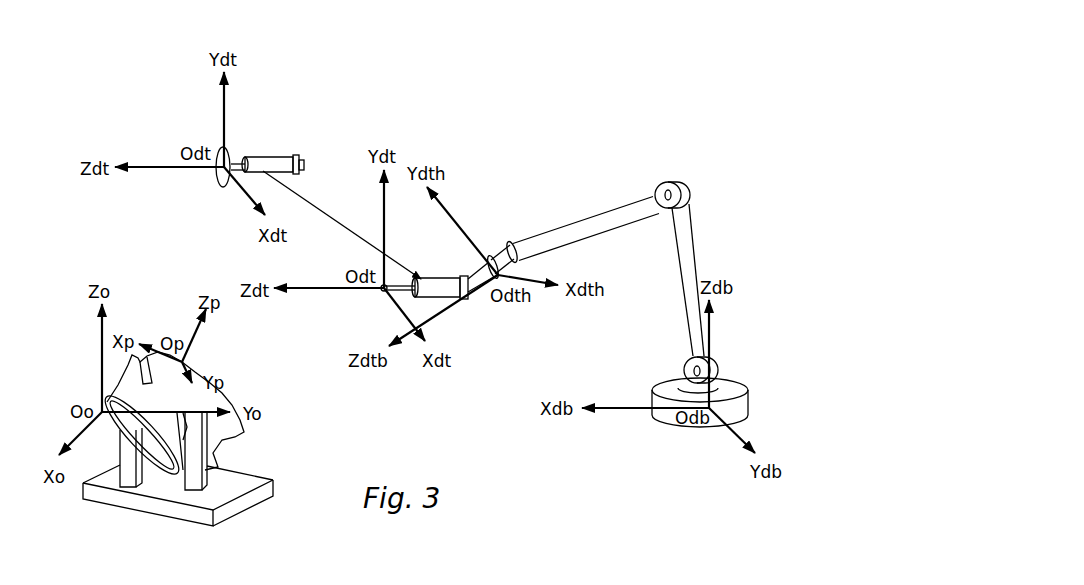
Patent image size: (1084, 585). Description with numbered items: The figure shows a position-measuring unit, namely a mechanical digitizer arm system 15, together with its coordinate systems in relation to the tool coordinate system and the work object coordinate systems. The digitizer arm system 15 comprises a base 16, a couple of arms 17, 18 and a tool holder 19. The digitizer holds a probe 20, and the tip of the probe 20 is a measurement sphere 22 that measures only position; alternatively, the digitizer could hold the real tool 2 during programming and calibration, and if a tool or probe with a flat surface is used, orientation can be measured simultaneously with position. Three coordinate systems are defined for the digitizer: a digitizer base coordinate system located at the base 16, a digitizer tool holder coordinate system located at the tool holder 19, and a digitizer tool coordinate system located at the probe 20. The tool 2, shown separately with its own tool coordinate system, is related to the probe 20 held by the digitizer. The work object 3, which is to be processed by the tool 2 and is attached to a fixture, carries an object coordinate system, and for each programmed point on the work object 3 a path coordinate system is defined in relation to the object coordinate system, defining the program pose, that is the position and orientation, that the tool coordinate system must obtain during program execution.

The tool 2 is at (275, 155).
The work object 3 is at (230, 434).
The mechanical digitizer arm system 15 is at (713, 202).
The base 16 is at (743, 404).
The arm 17 is at (686, 242).
The arm 18 is at (587, 222).
The tool holder 19 is at (490, 256).
The probe 20 is at (398, 282).
The measurement sphere 22 is at (384, 292).